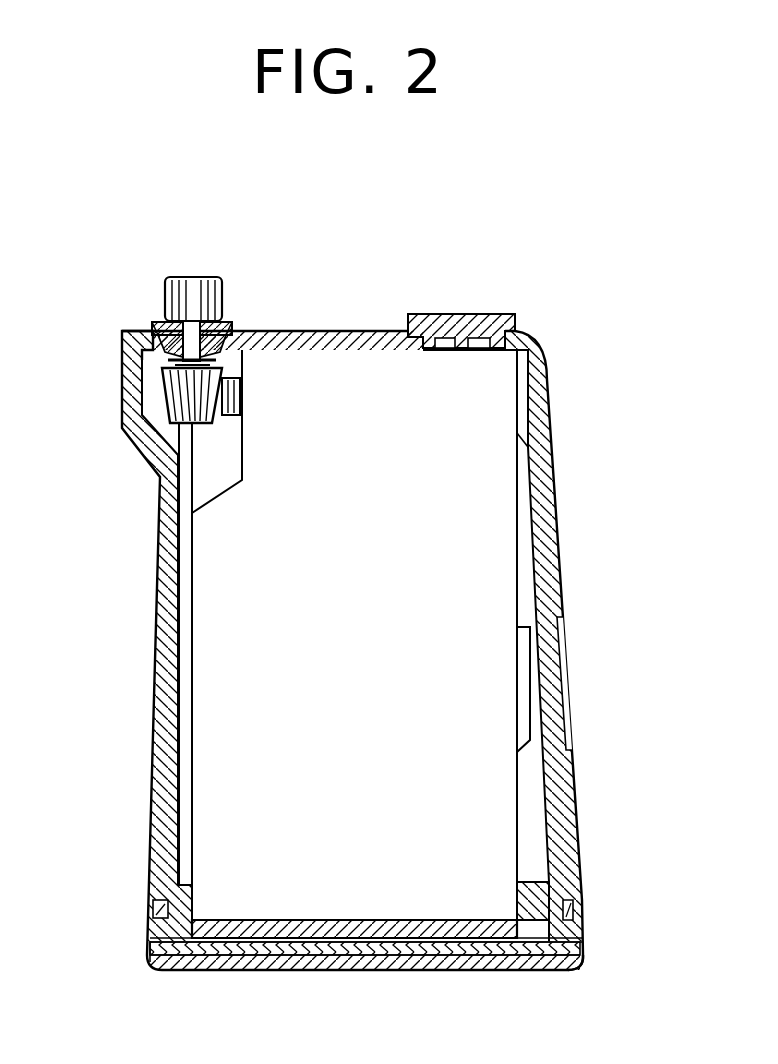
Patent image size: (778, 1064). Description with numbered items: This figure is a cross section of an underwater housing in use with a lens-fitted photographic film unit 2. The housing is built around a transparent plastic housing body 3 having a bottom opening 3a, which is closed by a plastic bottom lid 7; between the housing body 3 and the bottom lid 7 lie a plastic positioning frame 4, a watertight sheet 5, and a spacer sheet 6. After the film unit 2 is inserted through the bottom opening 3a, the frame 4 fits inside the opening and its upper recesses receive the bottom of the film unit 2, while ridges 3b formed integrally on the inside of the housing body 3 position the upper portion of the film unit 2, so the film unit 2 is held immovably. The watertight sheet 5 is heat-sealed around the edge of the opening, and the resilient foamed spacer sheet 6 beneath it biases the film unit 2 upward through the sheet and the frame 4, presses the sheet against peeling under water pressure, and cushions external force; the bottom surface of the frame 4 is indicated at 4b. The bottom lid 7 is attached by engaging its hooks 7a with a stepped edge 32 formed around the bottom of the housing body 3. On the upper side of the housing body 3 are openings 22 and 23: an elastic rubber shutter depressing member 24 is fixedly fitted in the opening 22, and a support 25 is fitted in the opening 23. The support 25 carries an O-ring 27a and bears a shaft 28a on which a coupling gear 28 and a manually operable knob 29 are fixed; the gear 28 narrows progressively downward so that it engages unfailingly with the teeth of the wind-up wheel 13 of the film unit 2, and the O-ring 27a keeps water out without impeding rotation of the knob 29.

The lens-fitted photographic film unit 2 is at (495, 688).
The housing body 3 is at (583, 795).
The bottom opening 3a is at (545, 965).
The ridges 3b is at (187, 437).
The positioning frame 4 is at (305, 918).
The bottom surface of floor plate 4b is at (347, 942).
The watertight sheet 5 is at (202, 948).
The spacer sheet 6 is at (160, 946).
The bottom lid 7 is at (586, 962).
The hooks 7a is at (153, 909).
The wind-up wheel 13 is at (233, 423).
The opening 22 is at (436, 345).
The opening 23 is at (210, 357).
The shutter depressing member 24 is at (446, 314).
The support 25 is at (123, 337).
The O-ring 27a is at (167, 322).
The coupling gear 28 is at (167, 405).
The shaft 28a is at (167, 356).
The operable knob 29 is at (187, 273).
The stepped edge 32 is at (574, 920).